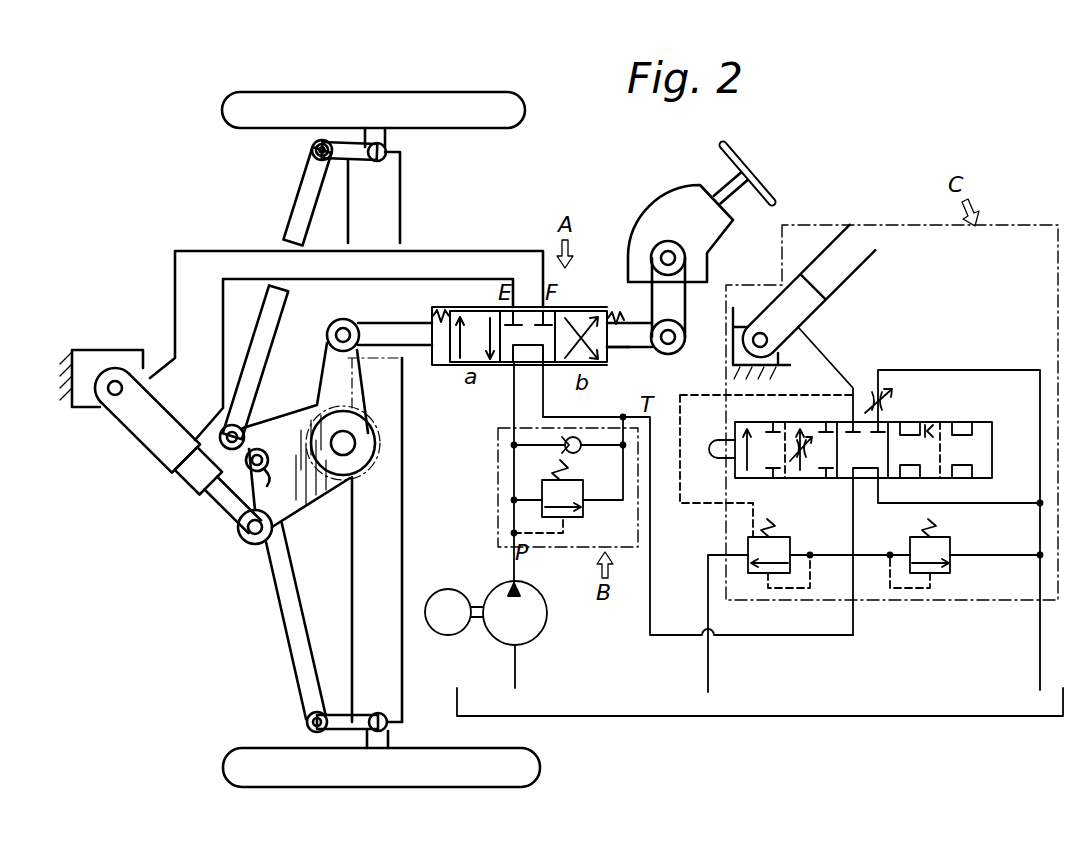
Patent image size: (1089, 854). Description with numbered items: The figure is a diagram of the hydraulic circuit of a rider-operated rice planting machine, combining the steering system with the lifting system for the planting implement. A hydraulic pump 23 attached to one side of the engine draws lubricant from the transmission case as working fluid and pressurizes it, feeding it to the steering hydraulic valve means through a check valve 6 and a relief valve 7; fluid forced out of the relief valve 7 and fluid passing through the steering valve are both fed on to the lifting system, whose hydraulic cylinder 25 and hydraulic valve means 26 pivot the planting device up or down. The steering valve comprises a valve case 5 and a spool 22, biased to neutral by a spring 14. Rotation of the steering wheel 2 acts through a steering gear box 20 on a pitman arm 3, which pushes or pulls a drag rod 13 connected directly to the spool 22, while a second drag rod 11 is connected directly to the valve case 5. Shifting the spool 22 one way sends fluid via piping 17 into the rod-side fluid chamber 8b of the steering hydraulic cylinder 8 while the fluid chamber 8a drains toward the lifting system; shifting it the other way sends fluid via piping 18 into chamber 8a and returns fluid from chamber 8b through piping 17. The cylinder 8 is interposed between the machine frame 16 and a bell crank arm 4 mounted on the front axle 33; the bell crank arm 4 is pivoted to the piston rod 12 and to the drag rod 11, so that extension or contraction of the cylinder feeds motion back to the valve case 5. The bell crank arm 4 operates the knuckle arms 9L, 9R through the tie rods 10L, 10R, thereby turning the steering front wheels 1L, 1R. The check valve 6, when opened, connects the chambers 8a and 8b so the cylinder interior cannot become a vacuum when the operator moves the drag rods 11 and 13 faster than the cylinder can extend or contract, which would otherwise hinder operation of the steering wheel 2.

The steering front wheel 1R is at (281, 116).
The steering front wheel 1L is at (252, 789).
The steering wheel 2 is at (772, 190).
The pitman arm 3 is at (686, 312).
The bell crank arm 4 is at (298, 500).
The valve case 5 is at (582, 307).
The check valve 6 is at (565, 440).
The relief valve 7 is at (584, 505).
The steering hydraulic cylinder 8 is at (165, 408).
The fluid chamber 8a is at (131, 425).
The rod-side fluid chamber 8b is at (163, 467).
The knuckle arm 9R is at (333, 170).
The knuckle arm 9L is at (337, 712).
The tie rod 10R is at (255, 362).
The tie rod 10L is at (283, 611).
The drag rod 11 is at (416, 349).
The piston rod 12 is at (216, 498).
The drag rod 13 is at (645, 350).
The spring 14 is at (435, 310).
The machine frame 16 is at (72, 412).
The piping 17 is at (222, 328).
The piping 18 is at (175, 286).
The steering gear box 20 is at (672, 215).
The spool 22 is at (612, 355).
The hydraulic pump 23 is at (549, 605).
The hydraulic cylinder 25 is at (827, 316).
The hydraulic valve means 26 is at (966, 422).
The front axle 33 is at (405, 471).